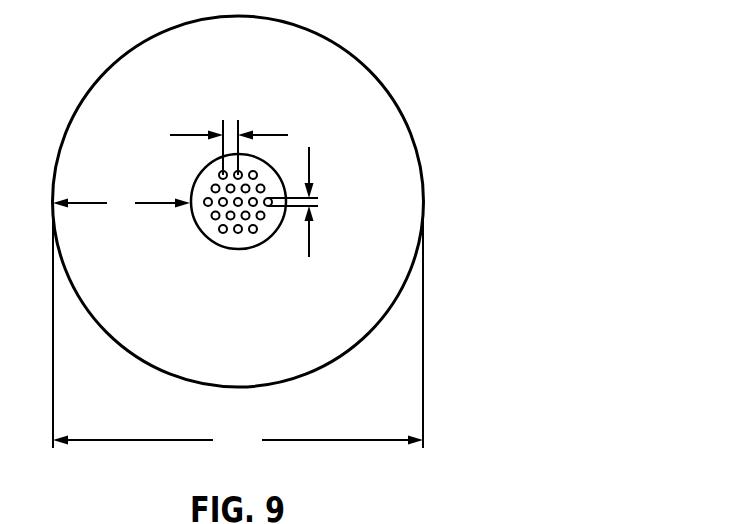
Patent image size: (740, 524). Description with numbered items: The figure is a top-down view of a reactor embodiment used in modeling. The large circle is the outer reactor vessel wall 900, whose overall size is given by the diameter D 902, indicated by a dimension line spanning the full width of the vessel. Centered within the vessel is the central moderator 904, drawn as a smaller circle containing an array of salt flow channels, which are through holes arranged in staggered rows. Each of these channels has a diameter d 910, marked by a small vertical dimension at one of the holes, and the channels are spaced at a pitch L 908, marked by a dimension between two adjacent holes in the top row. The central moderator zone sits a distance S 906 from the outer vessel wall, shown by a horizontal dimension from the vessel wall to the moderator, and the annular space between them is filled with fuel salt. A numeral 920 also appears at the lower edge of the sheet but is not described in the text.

The outer reactor vessel wall 900 is at (355, 52).
The diameter D 902 is at (238, 427).
The central moderator 904 is at (240, 248).
The distance S 906 is at (125, 214).
The pitch L 908 is at (222, 120).
The diameter d 910 is at (337, 201).
The reference numeral 920 is at (662, 518).